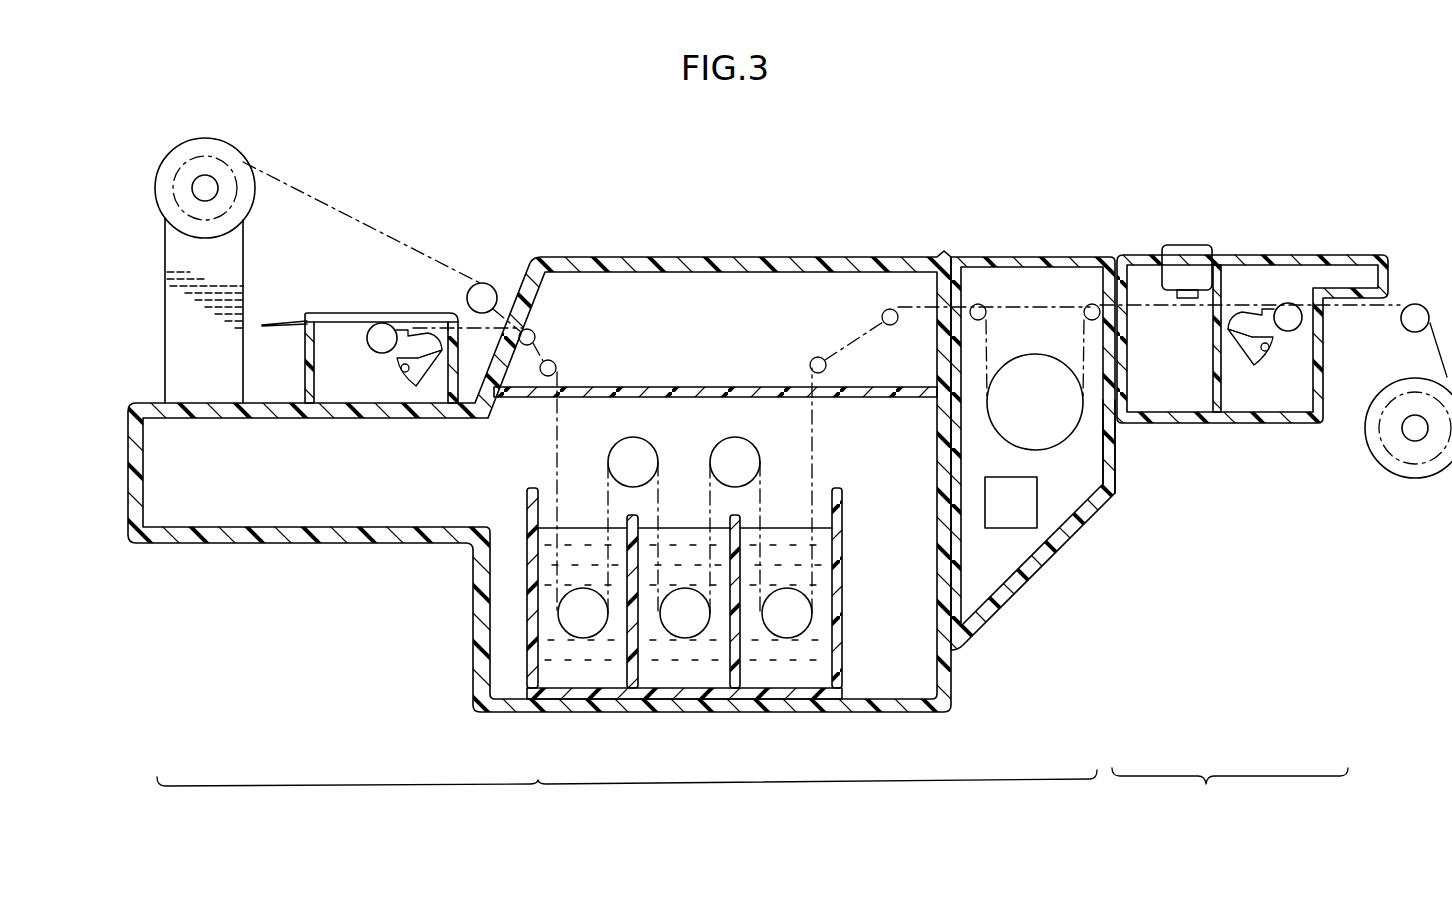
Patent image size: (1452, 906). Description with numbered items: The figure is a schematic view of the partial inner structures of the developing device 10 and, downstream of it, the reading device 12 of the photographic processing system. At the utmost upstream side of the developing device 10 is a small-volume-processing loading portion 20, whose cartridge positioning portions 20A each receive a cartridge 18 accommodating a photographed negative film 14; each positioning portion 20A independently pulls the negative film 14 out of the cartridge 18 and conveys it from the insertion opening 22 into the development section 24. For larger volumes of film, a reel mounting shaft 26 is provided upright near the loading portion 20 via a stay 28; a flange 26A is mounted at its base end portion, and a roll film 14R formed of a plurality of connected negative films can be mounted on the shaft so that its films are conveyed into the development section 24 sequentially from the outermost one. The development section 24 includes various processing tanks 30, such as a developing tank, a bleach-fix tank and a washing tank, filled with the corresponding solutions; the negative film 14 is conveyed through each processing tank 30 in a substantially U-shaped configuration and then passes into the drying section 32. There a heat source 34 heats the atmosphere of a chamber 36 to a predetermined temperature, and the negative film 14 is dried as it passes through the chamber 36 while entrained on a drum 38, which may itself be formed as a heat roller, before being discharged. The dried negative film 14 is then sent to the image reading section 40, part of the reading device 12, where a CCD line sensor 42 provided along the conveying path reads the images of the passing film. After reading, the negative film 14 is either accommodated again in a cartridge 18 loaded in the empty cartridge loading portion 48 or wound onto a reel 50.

The developing device 10 is at (627, 797).
The reading device 12 is at (1230, 793).
The negative film 14 is at (473, 325).
The roll film 14R is at (172, 205).
The cartridge 18 is at (373, 352).
The loading portion 20 is at (330, 302).
The cartridge positioning portion 20A is at (306, 370).
The insertion opening 22 is at (522, 302).
The development section 24 is at (772, 722).
The reel mounting shaft 26 is at (205, 176).
The flange 26A is at (228, 148).
The stay 28 is at (165, 332).
The processing tank 30 is at (530, 668).
The drying section 32 is at (1070, 557).
The heat source 34 is at (1008, 528).
The chamber 36 is at (1118, 490).
The drum 38 is at (1063, 450).
The image reading section 40 is at (1203, 428).
The CCD line sensor 42 is at (1188, 245).
The empty cartridge loading portion 48 is at (1280, 389).
The reel 50 is at (1415, 440).